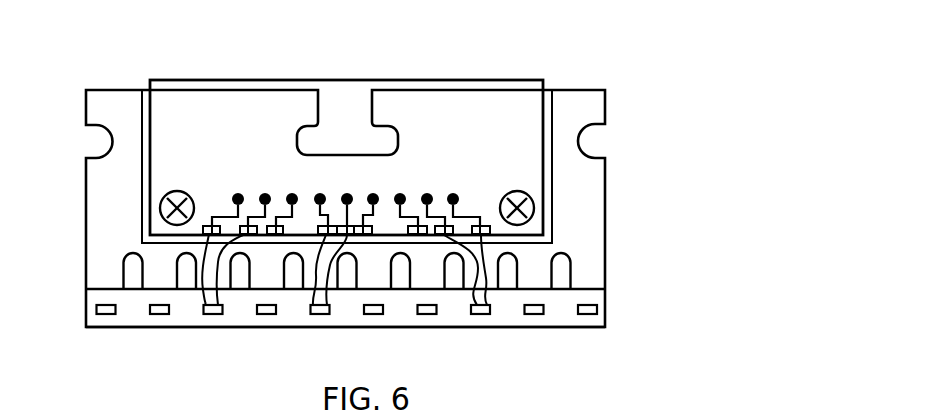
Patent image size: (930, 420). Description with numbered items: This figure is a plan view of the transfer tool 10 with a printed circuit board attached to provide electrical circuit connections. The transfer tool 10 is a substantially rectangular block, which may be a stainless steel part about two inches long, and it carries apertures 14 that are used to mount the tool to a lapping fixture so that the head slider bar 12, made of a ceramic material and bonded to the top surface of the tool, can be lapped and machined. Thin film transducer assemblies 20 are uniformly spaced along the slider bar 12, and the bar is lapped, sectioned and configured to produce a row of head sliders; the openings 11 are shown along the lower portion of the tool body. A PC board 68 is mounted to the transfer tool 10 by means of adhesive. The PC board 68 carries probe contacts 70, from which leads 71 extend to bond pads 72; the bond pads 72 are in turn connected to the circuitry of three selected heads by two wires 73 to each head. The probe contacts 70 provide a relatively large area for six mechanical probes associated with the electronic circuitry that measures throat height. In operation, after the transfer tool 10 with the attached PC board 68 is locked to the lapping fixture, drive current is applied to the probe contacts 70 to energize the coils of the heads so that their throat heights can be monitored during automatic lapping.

The transfer tool 10 is at (590, 222).
The terminal receiving slots 11 is at (105, 278).
The head slider bar 12 is at (510, 327).
The apertures 14 is at (159, 211).
The thin film transducer assemblies 20 is at (161, 315).
The PC board 68 is at (490, 107).
The probe contacts 70 is at (238, 194).
The leads 71 is at (229, 215).
The bond pads 72 is at (270, 226).
The wires 73 is at (475, 273).